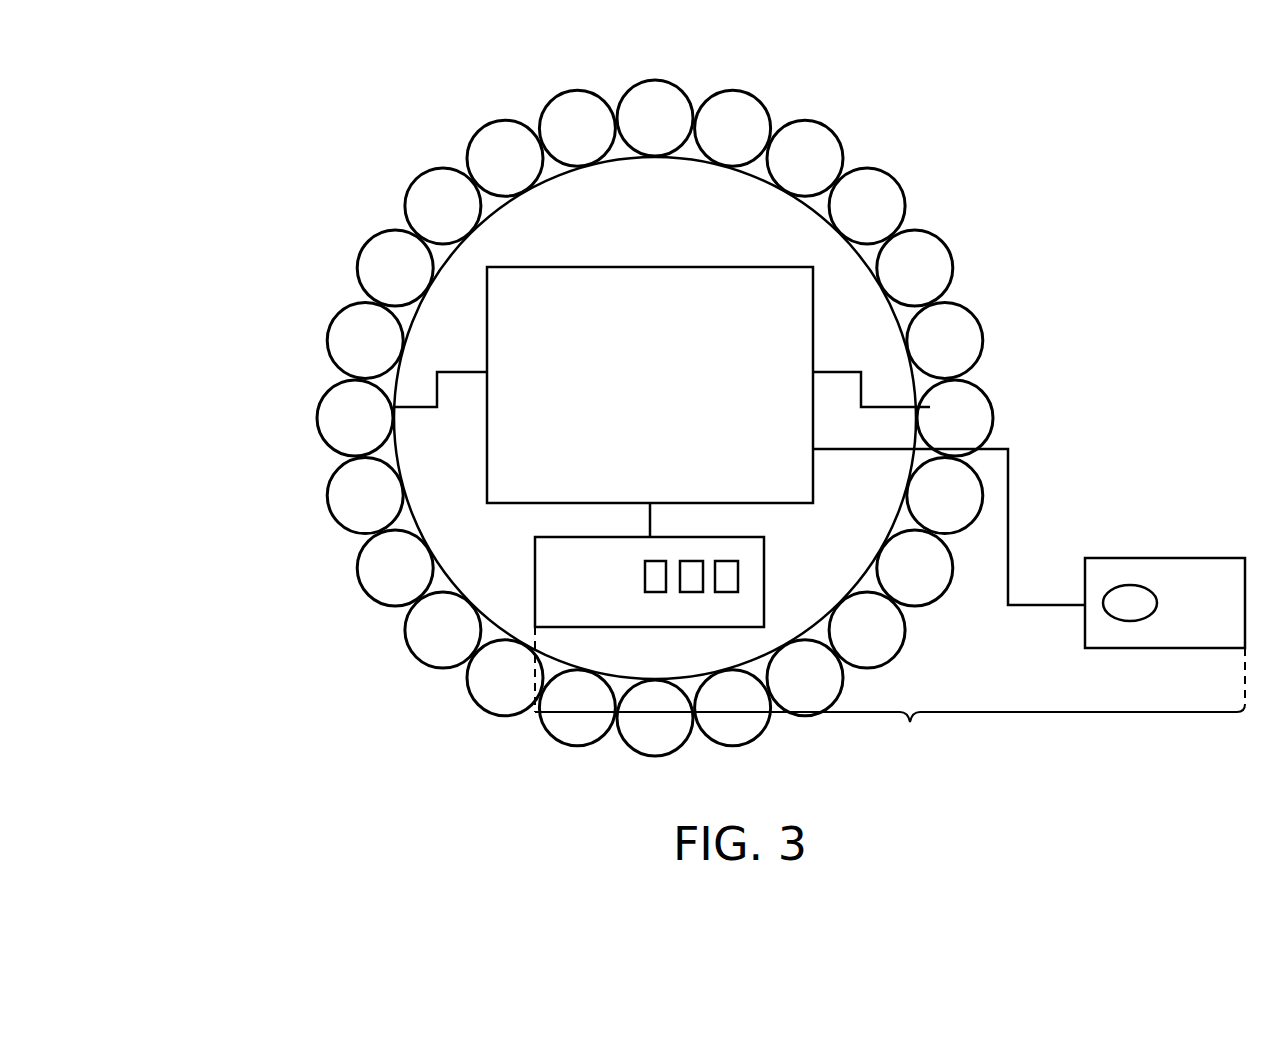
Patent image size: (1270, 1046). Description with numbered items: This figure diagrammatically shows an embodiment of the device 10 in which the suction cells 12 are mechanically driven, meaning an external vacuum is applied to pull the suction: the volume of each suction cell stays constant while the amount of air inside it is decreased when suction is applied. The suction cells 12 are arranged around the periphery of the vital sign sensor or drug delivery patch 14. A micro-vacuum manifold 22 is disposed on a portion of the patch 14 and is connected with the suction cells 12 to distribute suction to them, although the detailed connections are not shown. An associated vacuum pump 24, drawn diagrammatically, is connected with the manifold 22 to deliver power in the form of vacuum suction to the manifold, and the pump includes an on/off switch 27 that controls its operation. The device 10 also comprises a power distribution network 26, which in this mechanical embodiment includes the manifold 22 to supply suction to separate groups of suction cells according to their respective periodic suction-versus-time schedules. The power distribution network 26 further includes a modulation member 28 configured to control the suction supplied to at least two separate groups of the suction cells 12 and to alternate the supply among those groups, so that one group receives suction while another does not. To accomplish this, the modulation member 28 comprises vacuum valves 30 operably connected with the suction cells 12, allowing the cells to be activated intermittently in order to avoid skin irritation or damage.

The device 10 is at (226, 151).
The suction cells 12 is at (516, 99).
The vital sign sensor or drug delivery patch 14 is at (669, 202).
The micro-vacuum manifold 22 is at (659, 399).
The vacuum pump 24 is at (1211, 619).
The power distribution network 26 is at (890, 694).
The on/off switch 27 is at (1130, 585).
The modulation member 28 is at (587, 593).
The vacuum valves 30 is at (636, 594).